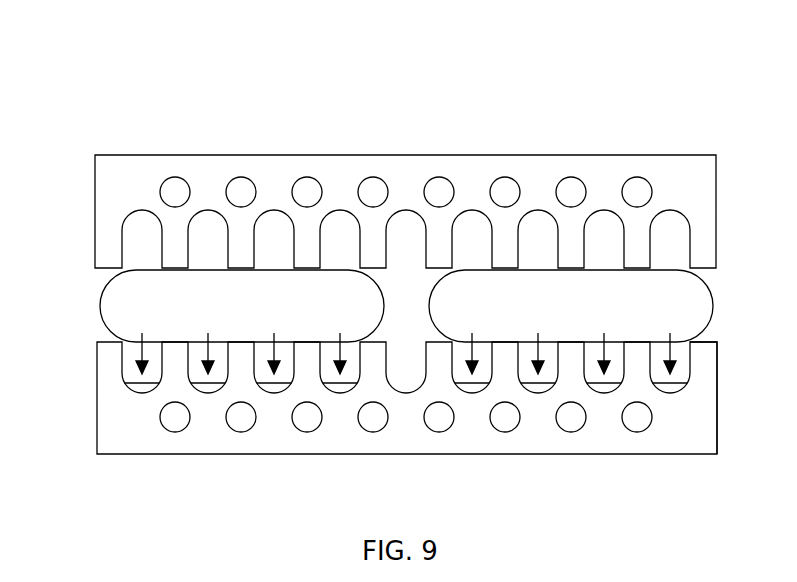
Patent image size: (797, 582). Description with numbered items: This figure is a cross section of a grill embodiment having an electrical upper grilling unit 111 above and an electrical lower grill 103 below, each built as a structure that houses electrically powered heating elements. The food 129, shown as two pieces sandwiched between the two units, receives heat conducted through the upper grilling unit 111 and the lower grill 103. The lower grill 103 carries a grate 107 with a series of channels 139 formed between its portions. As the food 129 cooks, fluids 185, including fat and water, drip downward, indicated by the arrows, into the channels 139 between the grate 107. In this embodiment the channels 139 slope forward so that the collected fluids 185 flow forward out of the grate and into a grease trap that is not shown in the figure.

The upper electric grilling unit 111 is at (453, 165).
The lower electric grill 103 is at (275, 443).
The grate 107 is at (702, 358).
The food 129 is at (117, 307).
The fluids 185 is at (208, 342).
The channels 139 is at (208, 397).